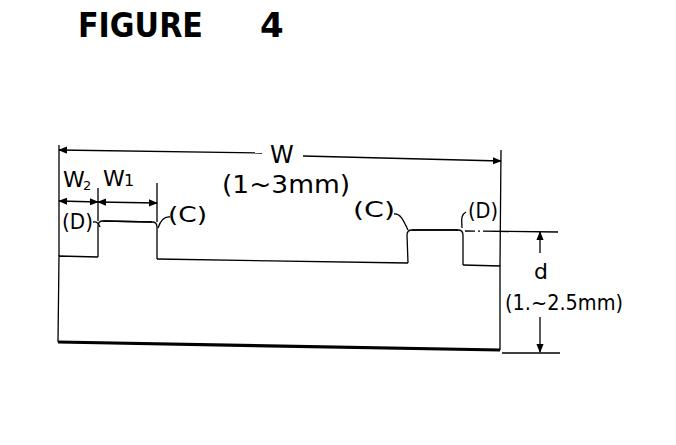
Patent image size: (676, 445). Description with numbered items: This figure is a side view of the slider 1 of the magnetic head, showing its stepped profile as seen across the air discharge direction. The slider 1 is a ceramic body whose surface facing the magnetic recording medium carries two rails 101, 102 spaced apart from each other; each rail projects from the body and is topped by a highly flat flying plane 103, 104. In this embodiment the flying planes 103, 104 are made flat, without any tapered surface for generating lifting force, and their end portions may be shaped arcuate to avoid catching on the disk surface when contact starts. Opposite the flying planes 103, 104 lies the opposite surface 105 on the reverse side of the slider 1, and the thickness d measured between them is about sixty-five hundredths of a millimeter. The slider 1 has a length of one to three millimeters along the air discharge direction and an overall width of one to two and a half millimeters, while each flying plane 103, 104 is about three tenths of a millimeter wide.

The slider 1 is at (302, 328).
The rail 101 is at (143, 249).
The rail 102 is at (407, 250).
The flying plane 103 is at (148, 216).
The flying plane 104 is at (425, 229).
The opposite surface 105 is at (185, 350).